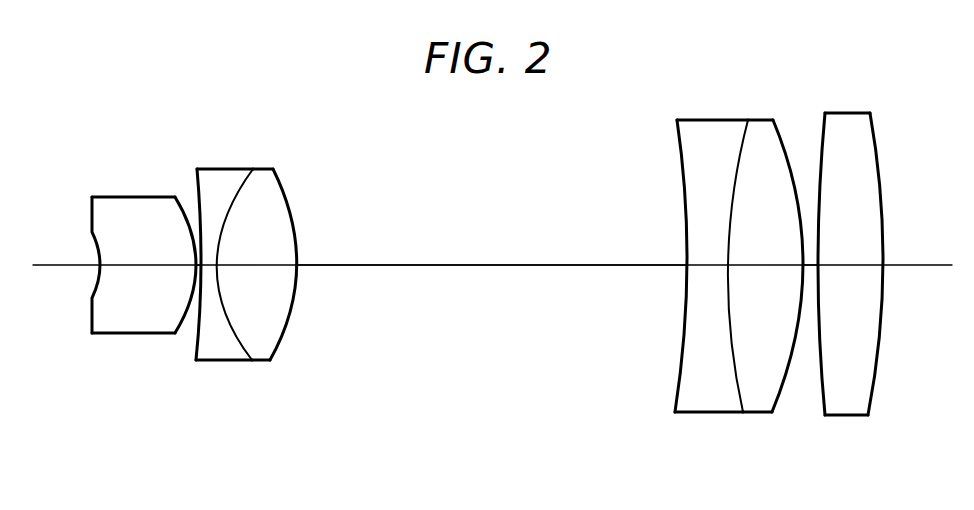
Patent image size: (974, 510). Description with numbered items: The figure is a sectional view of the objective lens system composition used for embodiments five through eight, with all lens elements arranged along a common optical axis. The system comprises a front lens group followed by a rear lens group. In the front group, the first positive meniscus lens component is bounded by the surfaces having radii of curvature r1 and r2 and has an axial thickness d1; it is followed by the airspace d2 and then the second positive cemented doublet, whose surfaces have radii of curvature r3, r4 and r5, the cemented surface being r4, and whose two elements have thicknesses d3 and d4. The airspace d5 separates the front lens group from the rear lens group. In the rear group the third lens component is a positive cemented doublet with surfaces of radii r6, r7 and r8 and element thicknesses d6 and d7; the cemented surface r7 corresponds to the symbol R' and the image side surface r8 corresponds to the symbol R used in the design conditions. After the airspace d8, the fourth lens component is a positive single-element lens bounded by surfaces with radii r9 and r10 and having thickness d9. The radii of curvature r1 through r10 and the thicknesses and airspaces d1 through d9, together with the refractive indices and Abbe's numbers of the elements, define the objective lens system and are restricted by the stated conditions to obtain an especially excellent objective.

The radius of curvature of first lens component object side surface r1 is at (95, 292).
The radius of curvature of first lens component image side surface r2 is at (182, 331).
The radius of curvature of second lens component front surface r3 is at (197, 349).
The radius of curvature of cemented surface of second lens component r4 is at (247, 354).
The radius of curvature of second lens component image side surface r5 is at (280, 350).
The radius of curvature of third lens component object side surface r6 is at (676, 398).
The radius of curvature of cemented surface of third lens component r7 is at (743, 397).
The radius of curvature of third lens component image side surface r8 is at (775, 402).
The radius of curvature of fourth lens component object side surface r9 is at (823, 400).
The radius of curvature of fourth lens component image side surface r10 is at (872, 402).
The thickness of first lens component d1 is at (140, 265).
The airspace between first and second lens components d2 is at (197, 264).
The thickness of first element of second lens component d3 is at (215, 266).
The thickness of second element of second lens component d4 is at (263, 266).
The airspace between front and rear lens groups d5 is at (495, 265).
The thickness of first element of third lens component d6 is at (707, 265).
The thickness of second element of third lens component d7 is at (760, 265).
The airspace between third and fourth lens components d8 is at (810, 265).
The thickness of fourth lens component d9 is at (850, 265).